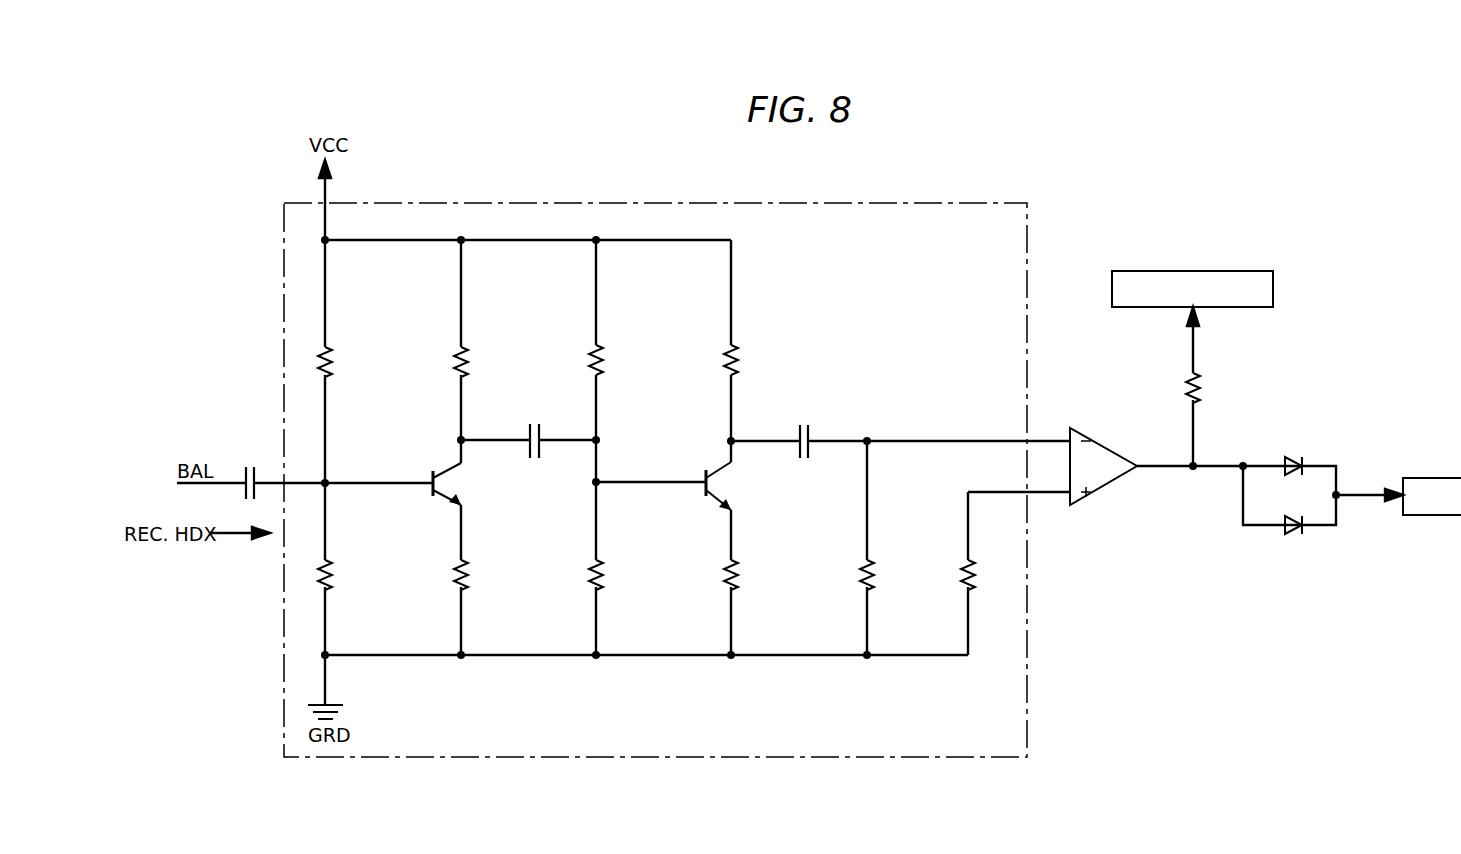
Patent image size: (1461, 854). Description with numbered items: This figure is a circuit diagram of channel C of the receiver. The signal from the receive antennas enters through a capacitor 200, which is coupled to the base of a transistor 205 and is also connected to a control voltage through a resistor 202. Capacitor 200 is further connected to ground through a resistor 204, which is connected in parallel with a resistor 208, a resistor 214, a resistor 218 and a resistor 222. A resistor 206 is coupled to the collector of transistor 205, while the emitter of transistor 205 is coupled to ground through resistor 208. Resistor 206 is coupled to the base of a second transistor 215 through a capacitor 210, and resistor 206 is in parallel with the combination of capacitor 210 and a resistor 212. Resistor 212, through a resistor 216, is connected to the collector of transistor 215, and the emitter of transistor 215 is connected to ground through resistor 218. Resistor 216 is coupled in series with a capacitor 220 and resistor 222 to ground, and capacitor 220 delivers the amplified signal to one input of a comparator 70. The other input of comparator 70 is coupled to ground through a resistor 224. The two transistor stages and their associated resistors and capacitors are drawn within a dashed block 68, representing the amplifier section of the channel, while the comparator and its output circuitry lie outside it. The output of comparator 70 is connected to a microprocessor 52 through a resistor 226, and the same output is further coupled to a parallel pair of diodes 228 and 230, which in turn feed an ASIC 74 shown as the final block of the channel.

The amplifier circuit 68 is at (920, 203).
The capacitor 200 is at (240, 467).
The resistor 202 is at (330, 347).
The resistor 204 is at (330, 560).
The transistor 205 is at (431, 490).
The resistor 206 is at (466, 347).
The resistor 208 is at (466, 560).
The capacitor 210 is at (542, 436).
The resistor 212 is at (601, 345).
The resistor 214 is at (601, 560).
The transistor 215 is at (704, 492).
The resistor 216 is at (736, 345).
The resistor 218 is at (736, 560).
The capacitor 220 is at (811, 432).
The resistor 222 is at (872, 560).
The resistor 224 is at (973, 560).
The resistor 226 is at (1198, 373).
The diode 228 is at (1304, 460).
The diode 230 is at (1304, 530).
The microprocessor 52 is at (1214, 271).
The comparator 70 is at (1110, 488).
The ASIC 74 is at (1437, 478).